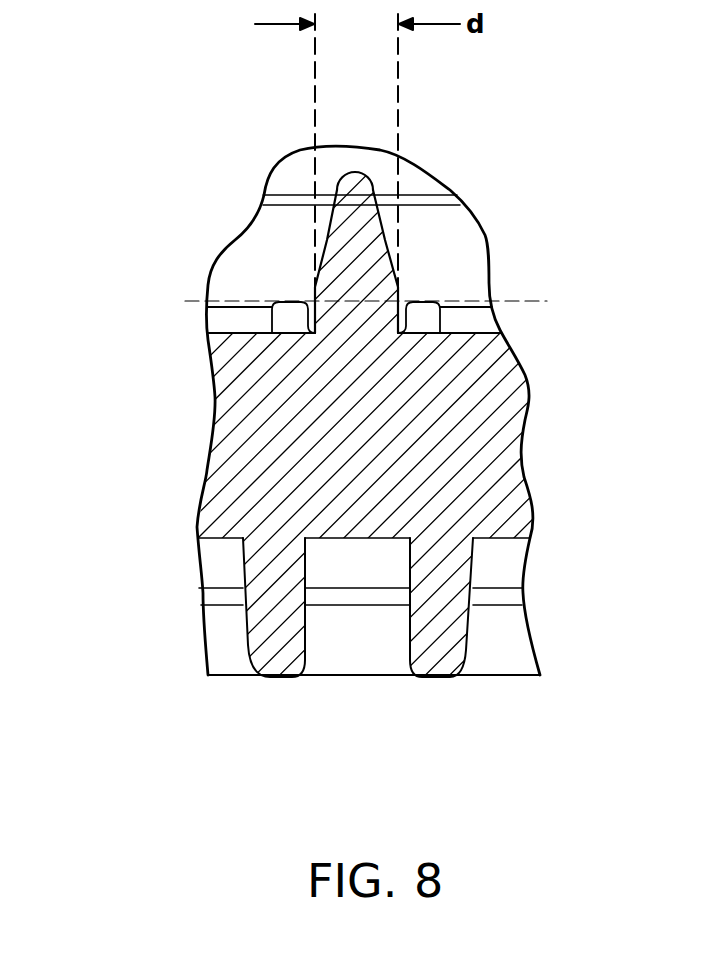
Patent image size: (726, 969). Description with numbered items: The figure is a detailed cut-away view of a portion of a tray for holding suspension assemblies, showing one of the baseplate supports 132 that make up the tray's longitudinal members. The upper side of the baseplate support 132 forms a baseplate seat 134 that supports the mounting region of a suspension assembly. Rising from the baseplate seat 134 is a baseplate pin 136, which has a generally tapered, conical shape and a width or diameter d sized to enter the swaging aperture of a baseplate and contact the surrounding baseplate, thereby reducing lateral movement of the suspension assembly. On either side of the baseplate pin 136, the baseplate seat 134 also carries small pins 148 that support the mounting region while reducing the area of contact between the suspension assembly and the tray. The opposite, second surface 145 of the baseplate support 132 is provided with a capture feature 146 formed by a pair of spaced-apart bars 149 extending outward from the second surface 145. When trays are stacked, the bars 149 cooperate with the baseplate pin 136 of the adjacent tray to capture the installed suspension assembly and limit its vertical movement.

The baseplate support 132 is at (510, 465).
The baseplate seat 134 is at (352, 342).
The baseplate pin 136 is at (357, 190).
The second surface 145 is at (223, 538).
The capture feature 146 is at (352, 650).
The small pin 148 is at (432, 315).
The bar 149 is at (260, 655).